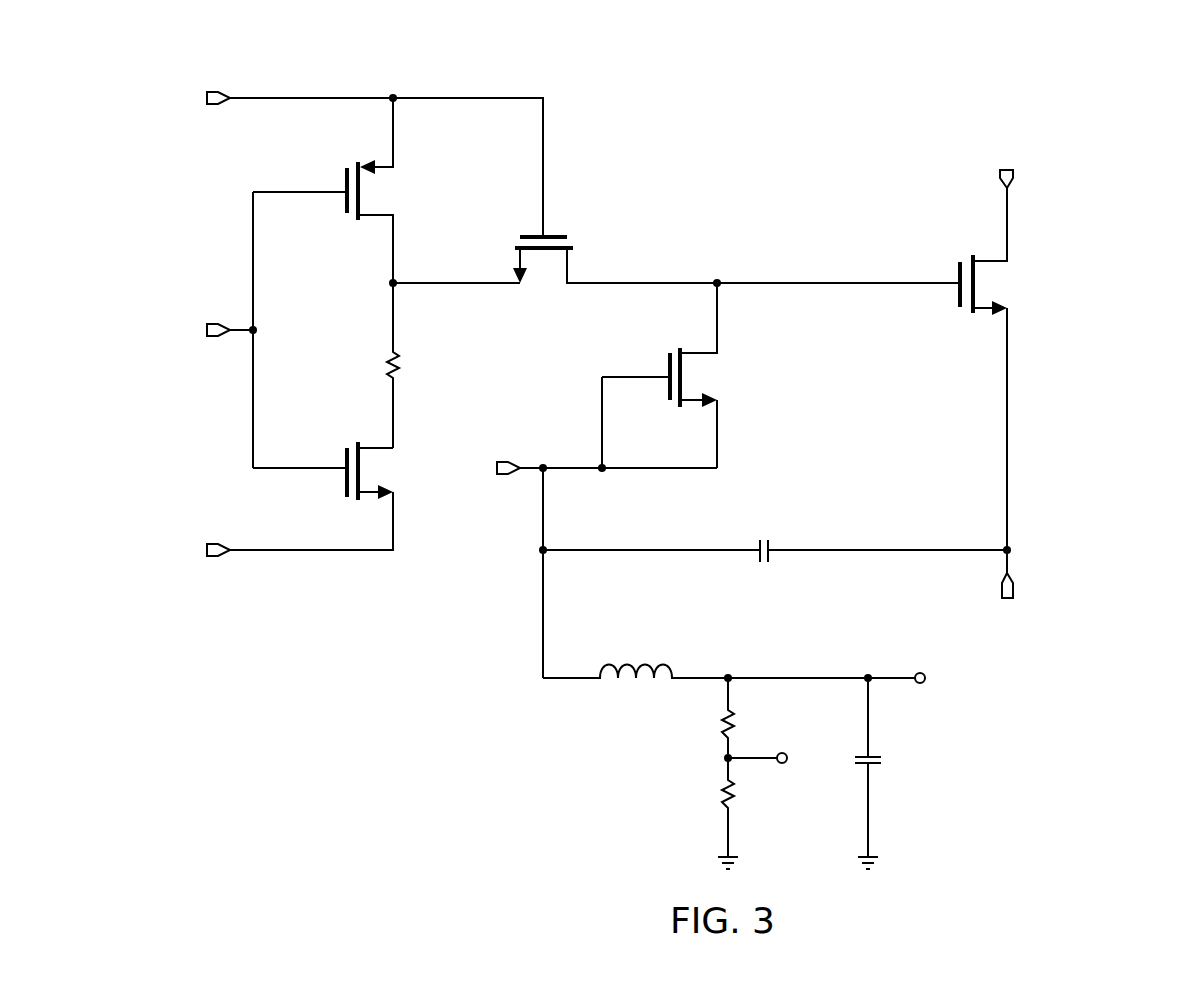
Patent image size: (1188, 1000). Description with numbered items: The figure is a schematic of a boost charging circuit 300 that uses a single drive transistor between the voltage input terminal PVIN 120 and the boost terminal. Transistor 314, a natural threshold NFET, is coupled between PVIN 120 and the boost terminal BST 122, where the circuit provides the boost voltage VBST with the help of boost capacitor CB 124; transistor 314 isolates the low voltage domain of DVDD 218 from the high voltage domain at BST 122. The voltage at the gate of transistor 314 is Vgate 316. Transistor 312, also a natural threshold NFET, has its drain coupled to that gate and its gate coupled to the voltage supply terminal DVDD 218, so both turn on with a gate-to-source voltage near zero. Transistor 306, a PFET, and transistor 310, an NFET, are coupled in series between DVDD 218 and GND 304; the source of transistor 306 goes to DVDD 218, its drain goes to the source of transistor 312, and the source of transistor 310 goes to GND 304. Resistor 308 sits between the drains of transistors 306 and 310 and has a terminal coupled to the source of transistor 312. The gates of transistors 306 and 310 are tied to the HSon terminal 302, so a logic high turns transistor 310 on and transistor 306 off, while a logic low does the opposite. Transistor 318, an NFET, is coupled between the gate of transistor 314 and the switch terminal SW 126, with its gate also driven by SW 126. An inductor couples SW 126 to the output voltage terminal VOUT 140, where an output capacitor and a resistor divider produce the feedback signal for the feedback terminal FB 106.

The boost charging circuit 300 is at (1120, 70).
The voltage supply terminal DVDD 218 is at (212, 91).
The HSon terminal 302 is at (214, 322).
The GND 304 is at (215, 560).
The transistor 306 is at (345, 183).
The resistor 308 is at (388, 362).
The transistor 310 is at (345, 478).
The transistor 312 is at (553, 235).
The transistor 314 is at (957, 273).
The Vgate 316 is at (822, 288).
The transistor 318 is at (667, 365).
The voltage input terminal PVIN 120 is at (1016, 172).
The boost terminal BST 122 is at (1016, 590).
The boost capacitor CB 124 is at (764, 565).
The switch terminal SW 126 is at (500, 478).
The output voltage terminal VOUT 140 is at (890, 676).
The feedback terminal FB 106 is at (782, 768).